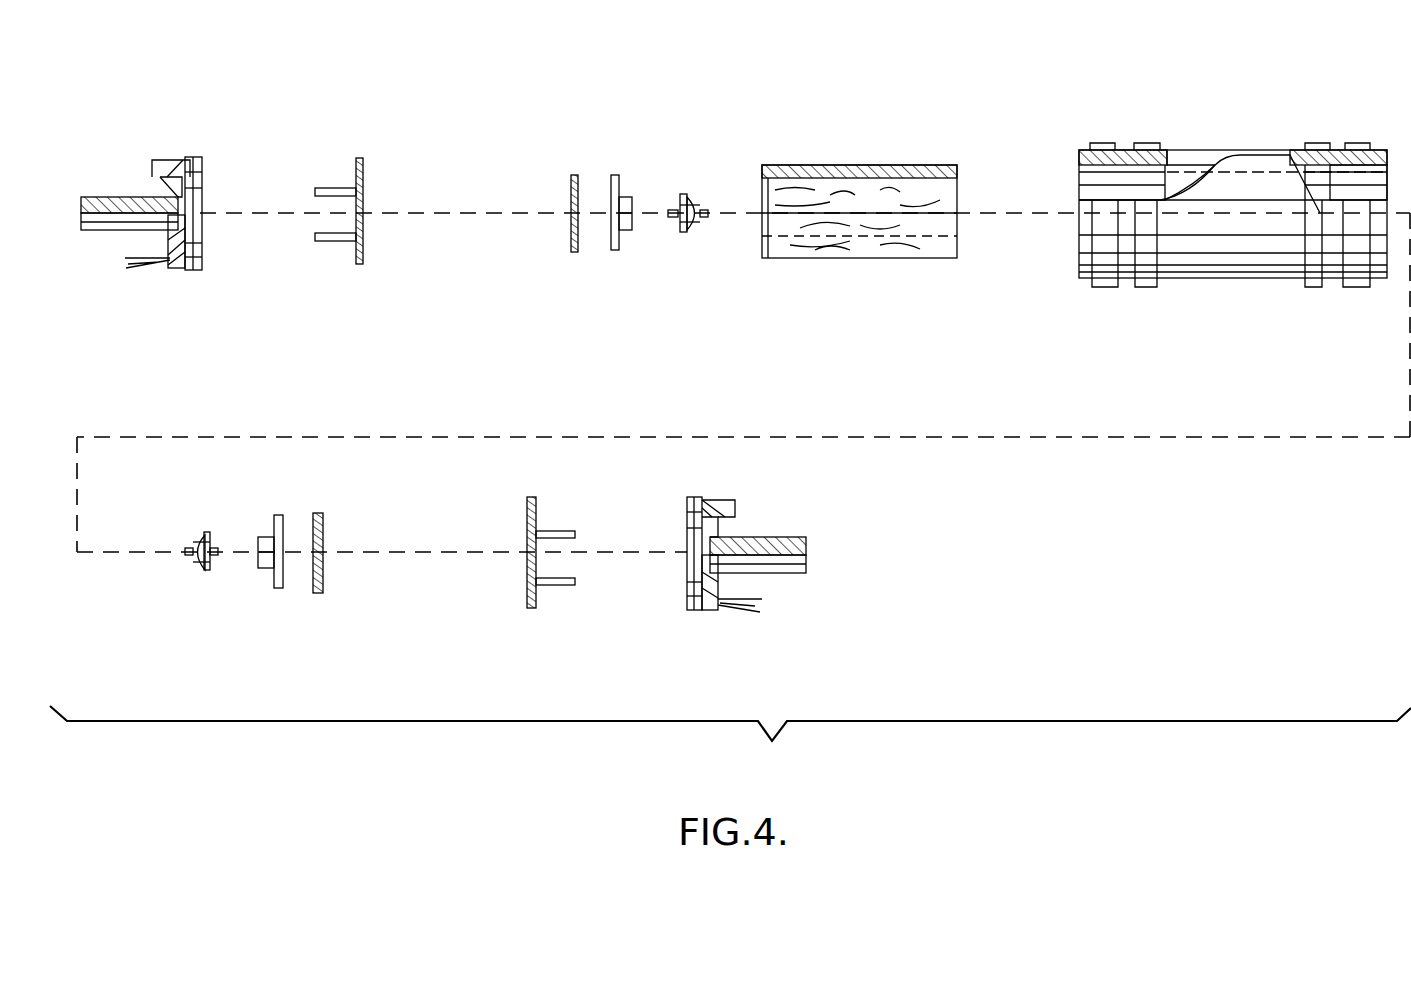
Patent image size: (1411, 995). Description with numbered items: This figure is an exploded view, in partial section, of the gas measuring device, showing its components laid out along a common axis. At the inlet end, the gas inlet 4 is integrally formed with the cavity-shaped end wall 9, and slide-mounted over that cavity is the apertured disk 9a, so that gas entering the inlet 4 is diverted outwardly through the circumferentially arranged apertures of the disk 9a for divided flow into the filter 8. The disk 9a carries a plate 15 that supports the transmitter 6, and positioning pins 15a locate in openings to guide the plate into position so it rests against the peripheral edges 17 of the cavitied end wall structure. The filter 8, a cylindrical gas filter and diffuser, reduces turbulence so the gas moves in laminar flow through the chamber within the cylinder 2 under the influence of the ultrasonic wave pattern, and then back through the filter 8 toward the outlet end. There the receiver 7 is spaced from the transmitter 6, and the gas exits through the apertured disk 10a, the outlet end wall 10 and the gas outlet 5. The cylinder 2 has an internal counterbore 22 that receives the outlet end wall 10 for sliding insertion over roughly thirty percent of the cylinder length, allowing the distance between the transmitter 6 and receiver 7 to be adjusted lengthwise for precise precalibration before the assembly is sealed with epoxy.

The cylinder 2 is at (1233, 155).
The gas inlet 4 is at (105, 196).
The gas outlet 5 is at (770, 537).
The transmitter 6 is at (700, 226).
The receiver 7 is at (200, 563).
The filter 8 is at (870, 258).
The end wall 9 is at (200, 268).
The apertured disk 9a is at (363, 245).
The end wall 10 is at (690, 610).
The apertured disk 10a is at (555, 531).
The plate 15 is at (575, 252).
The pins 15a is at (327, 188).
The peripheral edges 17 is at (323, 533).
The counterbore 22 is at (1358, 162).